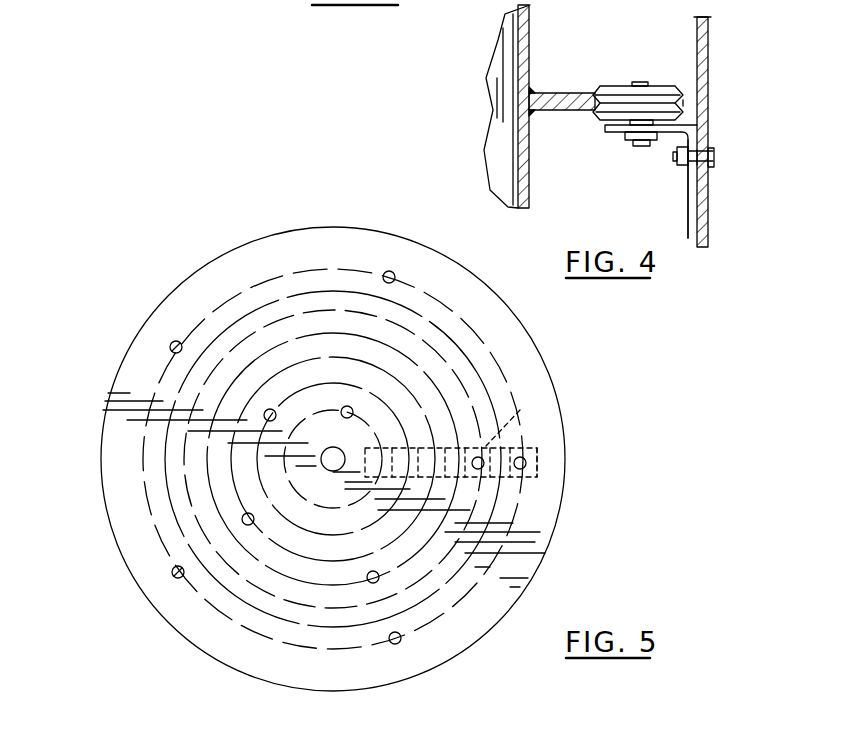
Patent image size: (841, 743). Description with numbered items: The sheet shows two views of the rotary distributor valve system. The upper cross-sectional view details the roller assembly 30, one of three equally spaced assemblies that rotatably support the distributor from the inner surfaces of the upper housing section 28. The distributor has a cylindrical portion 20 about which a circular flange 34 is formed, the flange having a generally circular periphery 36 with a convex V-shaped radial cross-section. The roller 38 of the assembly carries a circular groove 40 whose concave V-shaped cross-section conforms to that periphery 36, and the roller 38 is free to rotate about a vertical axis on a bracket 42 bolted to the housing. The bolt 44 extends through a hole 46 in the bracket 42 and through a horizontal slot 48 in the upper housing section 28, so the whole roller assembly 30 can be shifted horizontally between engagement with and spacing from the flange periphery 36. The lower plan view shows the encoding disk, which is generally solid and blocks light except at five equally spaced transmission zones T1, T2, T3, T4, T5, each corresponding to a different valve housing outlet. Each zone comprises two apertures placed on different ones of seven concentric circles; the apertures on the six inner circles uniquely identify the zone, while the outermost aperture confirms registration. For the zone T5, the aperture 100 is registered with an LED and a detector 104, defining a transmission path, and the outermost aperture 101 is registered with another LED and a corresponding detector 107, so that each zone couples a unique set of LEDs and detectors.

In FIG. 4, the cylindrical portion 20 is at (522, 44).
In FIG. 4, the upper housing section 28 is at (710, 55).
In FIG. 4, the roller assembly 30 is at (657, 72).
In FIG. 4, the circular flange 34 is at (560, 111).
In FIG. 4, the circular periphery 36 is at (593, 90).
In FIG. 4, the roller 38 is at (661, 82).
In FIG. 4, the circular groove 40 is at (686, 103).
In FIG. 4, the bracket 42 is at (612, 133).
In FIG. 4, the bolt 44 is at (715, 158).
In FIG. 4, the hole 46 is at (692, 172).
In FIG. 4, the slot 48 is at (706, 170).
In FIG. 5, the transmission zone T1 is at (397, 273).
In FIG. 5, the transmission zone T2 is at (176, 338).
In FIG. 5, the transmission zone T3 is at (168, 563).
In FIG. 5, the transmission zone T4 is at (407, 642).
In FIG. 5, the transmission zone T5 is at (531, 486).
In FIG. 5, the aperture 100 is at (481, 458).
In FIG. 5, the aperture 101 is at (548, 478).
In FIG. 5, the detector 104 is at (551, 414).
In FIG. 5, the detector 107 is at (527, 458).